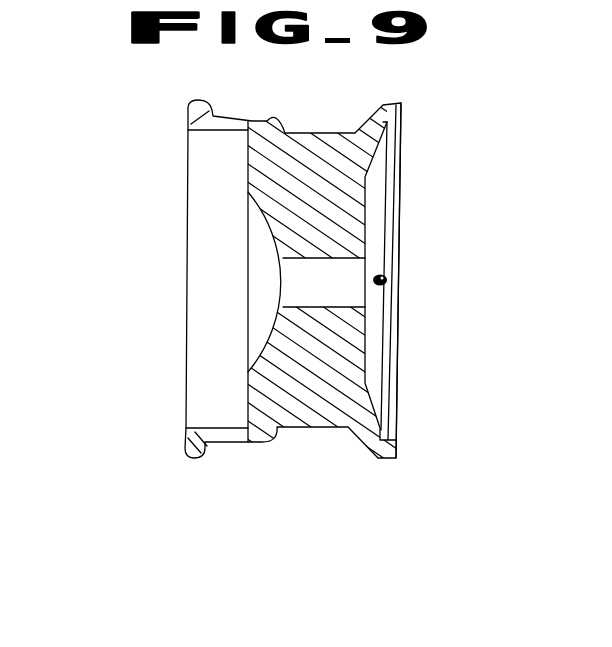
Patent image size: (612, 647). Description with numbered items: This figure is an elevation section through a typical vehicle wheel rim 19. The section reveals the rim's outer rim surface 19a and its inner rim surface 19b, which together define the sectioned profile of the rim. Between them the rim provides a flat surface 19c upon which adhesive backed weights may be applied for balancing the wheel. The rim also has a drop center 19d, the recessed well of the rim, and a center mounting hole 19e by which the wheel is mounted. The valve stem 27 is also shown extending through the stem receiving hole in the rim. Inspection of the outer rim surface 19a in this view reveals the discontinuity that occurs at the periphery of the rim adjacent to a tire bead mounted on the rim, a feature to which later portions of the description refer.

The rim 19 is at (423, 114).
The outer rim surface 19a is at (401, 379).
The inner rim surface 19b is at (188, 234).
The flat surface 19c is at (248, 167).
The drop center 19d is at (323, 132).
The center mounting hole 19e is at (353, 266).
The valve stem 27 is at (373, 284).